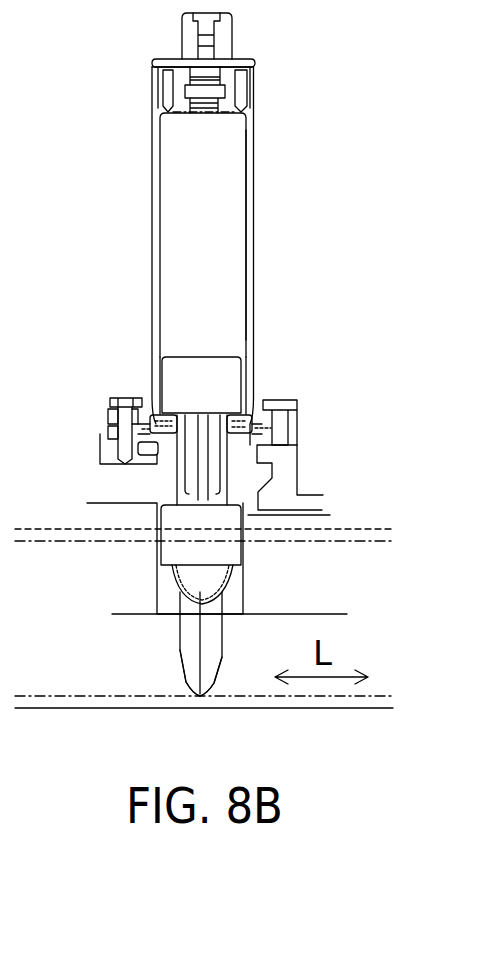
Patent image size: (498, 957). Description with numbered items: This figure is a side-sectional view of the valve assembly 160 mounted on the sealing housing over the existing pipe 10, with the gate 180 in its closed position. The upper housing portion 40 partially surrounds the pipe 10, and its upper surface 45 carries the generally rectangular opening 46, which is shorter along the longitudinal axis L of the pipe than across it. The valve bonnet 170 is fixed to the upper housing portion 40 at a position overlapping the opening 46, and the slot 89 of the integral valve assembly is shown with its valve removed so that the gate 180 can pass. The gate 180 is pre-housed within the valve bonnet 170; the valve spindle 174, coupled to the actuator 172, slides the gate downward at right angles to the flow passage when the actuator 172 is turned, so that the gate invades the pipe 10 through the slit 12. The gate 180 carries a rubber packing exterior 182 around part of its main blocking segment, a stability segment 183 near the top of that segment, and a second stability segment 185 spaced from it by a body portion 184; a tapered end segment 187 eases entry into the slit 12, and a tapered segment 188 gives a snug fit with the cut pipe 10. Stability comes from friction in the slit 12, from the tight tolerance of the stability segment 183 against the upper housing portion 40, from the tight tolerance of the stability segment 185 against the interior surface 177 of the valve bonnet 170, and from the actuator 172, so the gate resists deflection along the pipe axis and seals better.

The existing pipe 10 is at (53, 682).
The slit 12 is at (222, 592).
The upper housing portion 40 is at (150, 515).
The upper surface 45 is at (297, 433).
The opening 46 is at (165, 442).
The slot 89 is at (257, 477).
The valve assembly 160 is at (140, 182).
The valve bonnet 170 is at (250, 227).
The actuator 172 is at (235, 33).
The valve spindle 174 is at (230, 110).
The interior surface 177 is at (250, 282).
The gate 180 is at (172, 630).
The rubber packing exterior 182 is at (188, 658).
The stability segment 183 is at (177, 528).
The body portion 184 is at (215, 445).
The stability segment 185 is at (222, 375).
The tapered end segment 187 is at (202, 696).
The tapered segment 188 is at (180, 593).